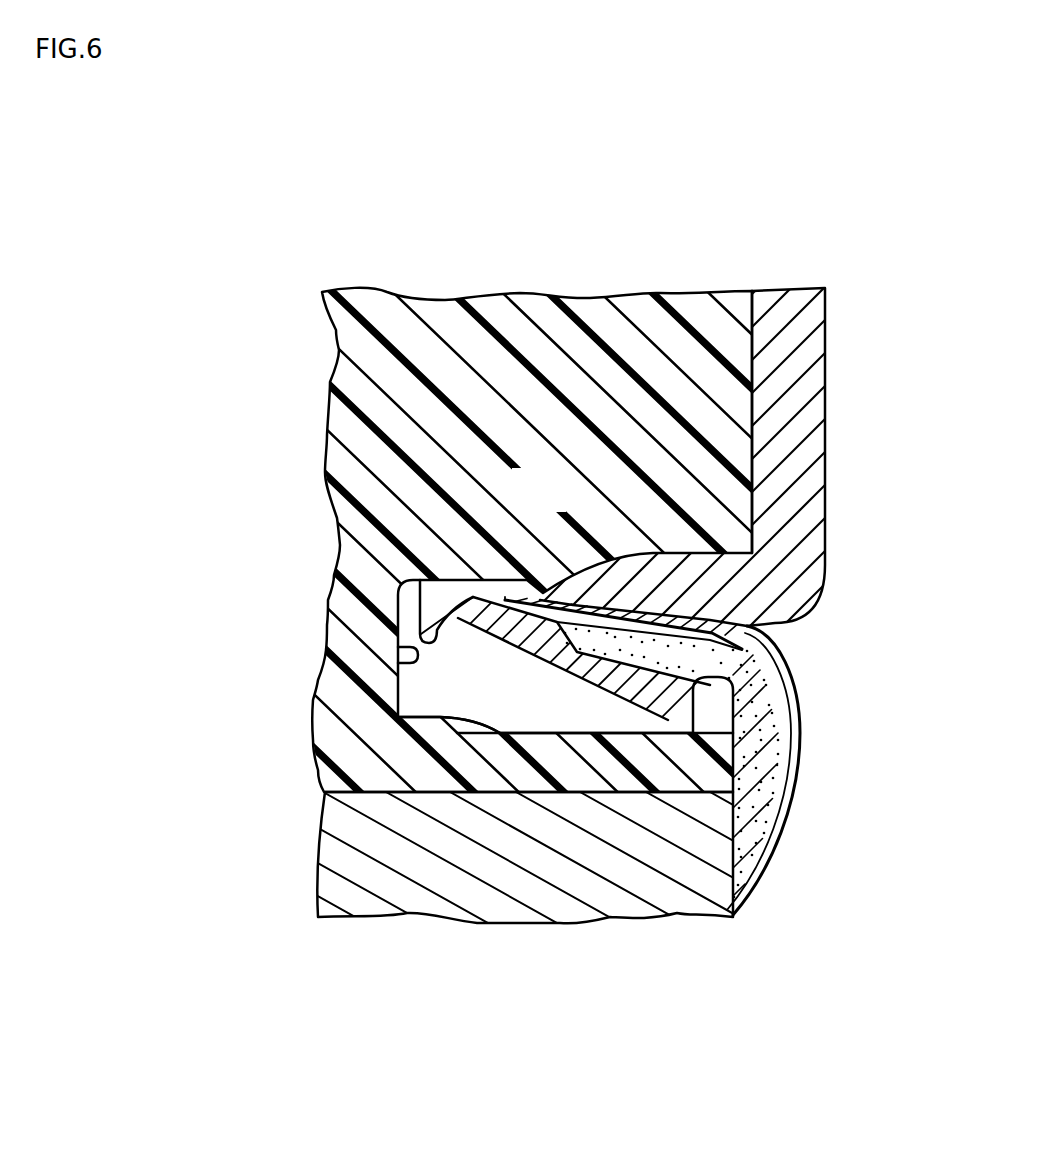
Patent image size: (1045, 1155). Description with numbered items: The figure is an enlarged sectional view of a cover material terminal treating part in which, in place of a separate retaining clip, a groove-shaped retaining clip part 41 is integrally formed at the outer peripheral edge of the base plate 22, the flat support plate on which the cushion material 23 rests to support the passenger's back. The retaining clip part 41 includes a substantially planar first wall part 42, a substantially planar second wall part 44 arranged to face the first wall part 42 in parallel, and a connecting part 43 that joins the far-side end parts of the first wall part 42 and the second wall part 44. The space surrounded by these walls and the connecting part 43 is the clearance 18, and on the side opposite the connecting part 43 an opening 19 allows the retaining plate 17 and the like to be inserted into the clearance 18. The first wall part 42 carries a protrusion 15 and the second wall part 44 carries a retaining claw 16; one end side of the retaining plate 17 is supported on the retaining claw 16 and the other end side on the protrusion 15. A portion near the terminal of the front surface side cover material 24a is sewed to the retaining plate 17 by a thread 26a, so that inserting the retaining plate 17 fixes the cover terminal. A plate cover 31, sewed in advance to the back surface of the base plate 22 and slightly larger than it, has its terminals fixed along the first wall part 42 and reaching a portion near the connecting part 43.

The protrusion 15 is at (541, 592).
The retaining claw 16 is at (773, 727).
The retaining plate 17 is at (663, 713).
The clearance 18 is at (522, 703).
The opening 19 is at (757, 630).
The base plate 22 is at (653, 330).
The cushion material 23 is at (350, 887).
The front surface side cover material 24a is at (750, 830).
The thread 26a is at (571, 683).
The plate cover 31 is at (805, 390).
The retaining clip part 41 is at (399, 649).
The first wall part 42 is at (398, 592).
The connecting part 43 is at (398, 650).
The second wall part 44 is at (398, 720).